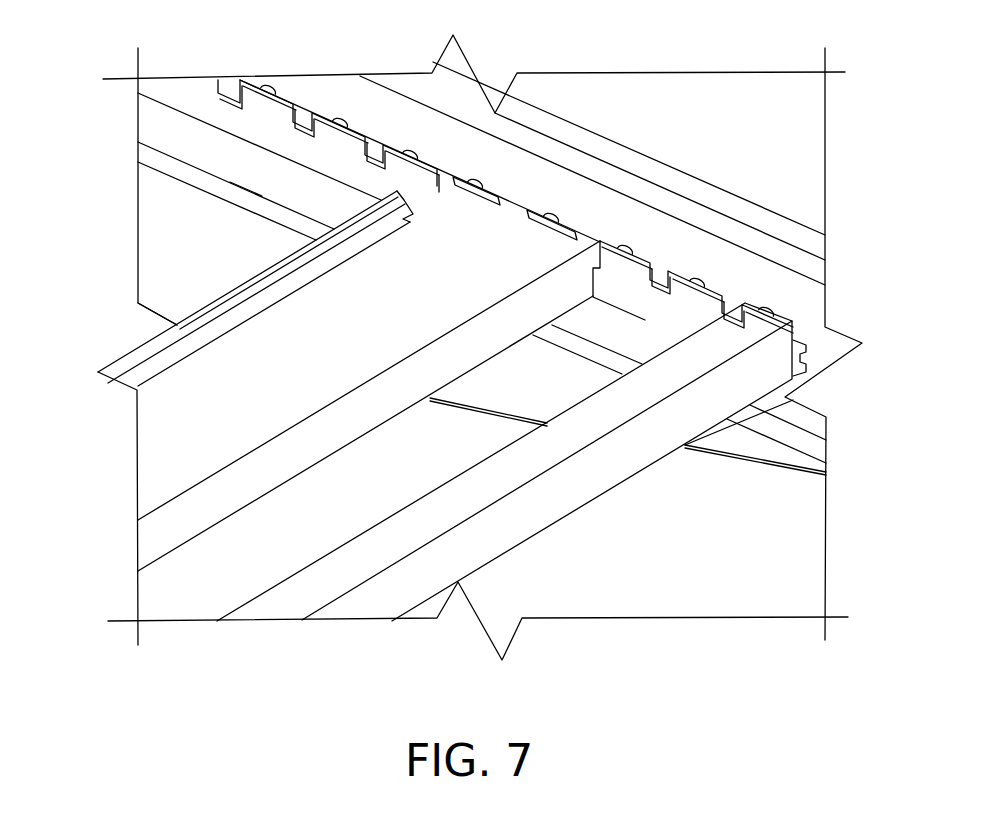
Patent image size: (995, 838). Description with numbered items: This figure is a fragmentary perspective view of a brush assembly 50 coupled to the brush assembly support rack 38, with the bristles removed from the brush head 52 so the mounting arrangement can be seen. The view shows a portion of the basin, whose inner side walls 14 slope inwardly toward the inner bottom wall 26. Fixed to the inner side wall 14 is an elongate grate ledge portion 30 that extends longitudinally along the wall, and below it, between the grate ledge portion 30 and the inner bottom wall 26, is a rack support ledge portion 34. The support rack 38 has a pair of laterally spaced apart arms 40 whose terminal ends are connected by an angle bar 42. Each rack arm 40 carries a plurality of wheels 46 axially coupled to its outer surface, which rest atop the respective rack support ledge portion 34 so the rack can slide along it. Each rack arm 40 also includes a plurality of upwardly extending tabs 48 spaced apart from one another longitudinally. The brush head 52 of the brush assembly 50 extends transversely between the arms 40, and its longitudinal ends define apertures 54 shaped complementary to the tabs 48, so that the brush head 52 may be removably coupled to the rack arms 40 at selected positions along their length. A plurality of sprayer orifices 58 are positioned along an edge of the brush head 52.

The inner side wall 14 is at (204, 233).
The inner bottom wall 26 is at (694, 539).
The grate ledge portion 30 is at (665, 163).
The rack support ledge portion 34 is at (803, 340).
The brush assembly support rack 38 is at (562, 532).
The rack arm 40 is at (252, 143).
The angle bar 42 is at (593, 500).
The wheel 46 is at (633, 252).
The tab 48 is at (289, 100).
The brush assembly 50 is at (157, 449).
The brush head 52 is at (279, 381).
The aperture 54 is at (475, 192).
The sprayer orifice 58 is at (200, 320).